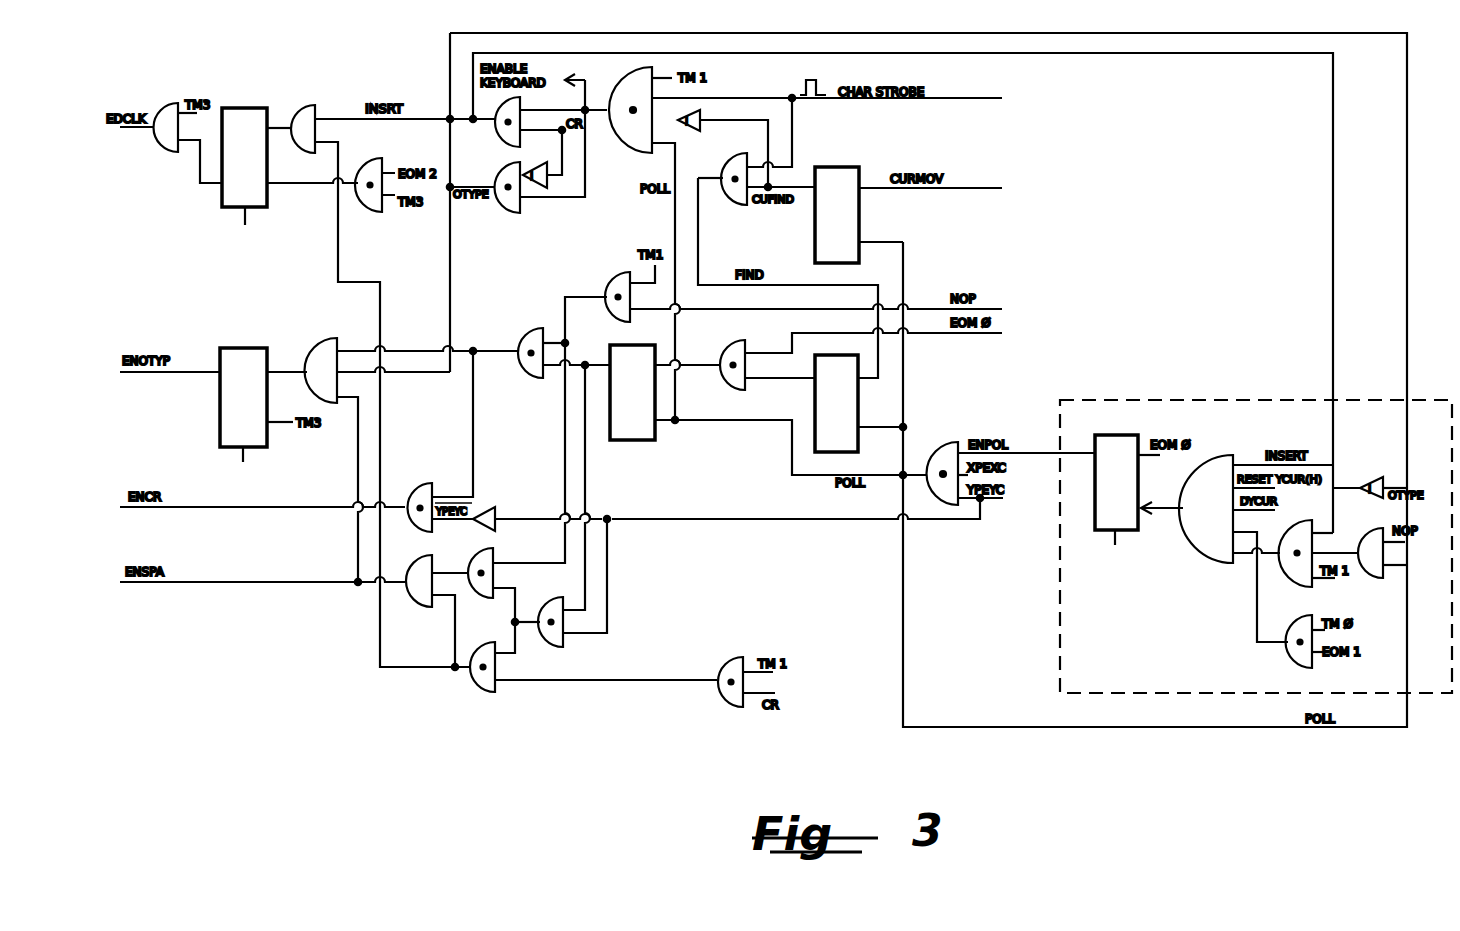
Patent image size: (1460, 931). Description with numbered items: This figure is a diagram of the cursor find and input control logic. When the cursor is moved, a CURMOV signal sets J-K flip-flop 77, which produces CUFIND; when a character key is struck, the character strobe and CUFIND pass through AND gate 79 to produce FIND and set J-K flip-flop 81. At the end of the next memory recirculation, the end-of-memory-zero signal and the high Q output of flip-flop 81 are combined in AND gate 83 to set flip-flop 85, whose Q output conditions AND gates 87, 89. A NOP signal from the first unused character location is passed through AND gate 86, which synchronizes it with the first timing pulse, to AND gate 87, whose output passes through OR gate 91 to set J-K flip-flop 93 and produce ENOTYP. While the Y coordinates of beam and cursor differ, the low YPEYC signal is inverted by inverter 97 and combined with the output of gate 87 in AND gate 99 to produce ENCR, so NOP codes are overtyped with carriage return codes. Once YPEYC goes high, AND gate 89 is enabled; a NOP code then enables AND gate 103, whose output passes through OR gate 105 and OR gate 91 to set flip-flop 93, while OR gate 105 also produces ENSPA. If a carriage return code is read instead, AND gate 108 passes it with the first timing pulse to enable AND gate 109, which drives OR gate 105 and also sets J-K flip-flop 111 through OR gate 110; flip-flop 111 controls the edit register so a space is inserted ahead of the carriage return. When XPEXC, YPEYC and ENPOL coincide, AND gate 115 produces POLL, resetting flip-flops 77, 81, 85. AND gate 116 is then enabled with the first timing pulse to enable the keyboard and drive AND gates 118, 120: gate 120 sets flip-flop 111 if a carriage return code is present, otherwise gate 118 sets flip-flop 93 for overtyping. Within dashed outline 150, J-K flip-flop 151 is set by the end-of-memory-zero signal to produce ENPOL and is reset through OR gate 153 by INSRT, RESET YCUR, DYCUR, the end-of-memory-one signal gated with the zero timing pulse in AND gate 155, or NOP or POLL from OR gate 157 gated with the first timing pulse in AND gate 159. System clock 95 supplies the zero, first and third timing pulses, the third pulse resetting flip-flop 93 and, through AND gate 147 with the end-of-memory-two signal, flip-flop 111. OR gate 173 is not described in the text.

The OR gate 173 is at (173, 100).
The J-K flip-flop 111 is at (247, 108).
The OR gate 110 is at (302, 105).
The AND gate 147 is at (378, 158).
The system clock 95 is at (676, 391).
The AND gate 120 is at (503, 152).
The AND gate 118 is at (485, 194).
The AND gate 116 is at (636, 159).
The AND gate 79 is at (741, 202).
The J-K flip-flop 77 is at (859, 214).
The AND gate 86 is at (618, 276).
The AND gate 87 is at (533, 325).
The flip-flop 85 is at (626, 440).
The AND gate 83 is at (733, 337).
The J-K flip-flop 81 is at (815, 398).
The AND gate 115 is at (941, 442).
The J-K flip-flop 93 is at (256, 343).
The OR gate 91 is at (329, 336).
The AND gate 99 is at (421, 483).
The inverter 97 is at (491, 517).
The OR gate 105 is at (423, 553).
The AND gate 103 is at (481, 545).
The AND gate 89 is at (560, 645).
The AND gate 109 is at (487, 692).
The AND gate 108 is at (728, 656).
The dashed outline 150 is at (1236, 400).
The J-K flip-flop 151 is at (1130, 433).
The OR gate 153 is at (1224, 564).
The AND gate 159 is at (1299, 585).
The OR gate 157 is at (1370, 587).
The AND gate 155 is at (1291, 661).